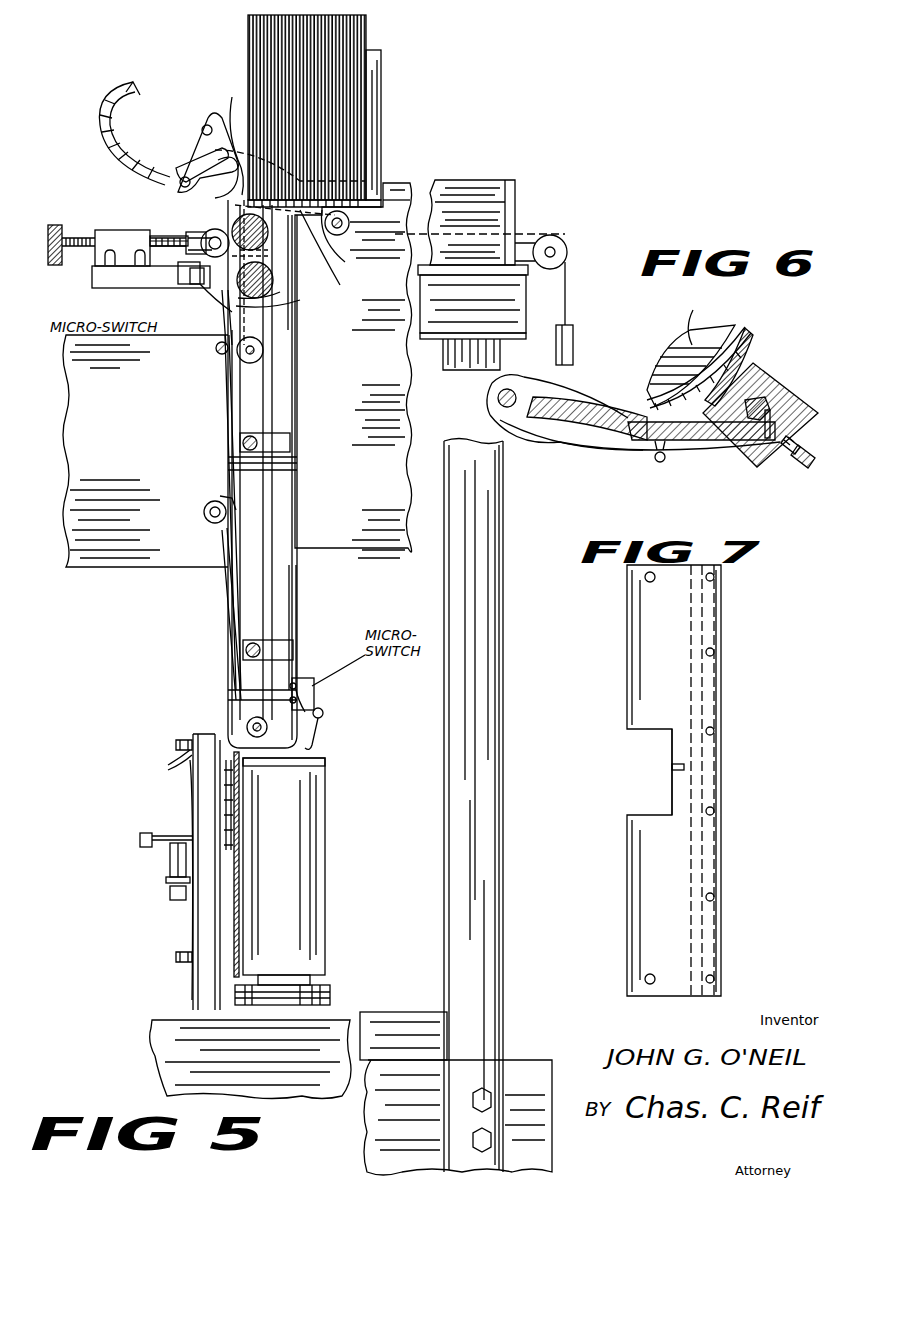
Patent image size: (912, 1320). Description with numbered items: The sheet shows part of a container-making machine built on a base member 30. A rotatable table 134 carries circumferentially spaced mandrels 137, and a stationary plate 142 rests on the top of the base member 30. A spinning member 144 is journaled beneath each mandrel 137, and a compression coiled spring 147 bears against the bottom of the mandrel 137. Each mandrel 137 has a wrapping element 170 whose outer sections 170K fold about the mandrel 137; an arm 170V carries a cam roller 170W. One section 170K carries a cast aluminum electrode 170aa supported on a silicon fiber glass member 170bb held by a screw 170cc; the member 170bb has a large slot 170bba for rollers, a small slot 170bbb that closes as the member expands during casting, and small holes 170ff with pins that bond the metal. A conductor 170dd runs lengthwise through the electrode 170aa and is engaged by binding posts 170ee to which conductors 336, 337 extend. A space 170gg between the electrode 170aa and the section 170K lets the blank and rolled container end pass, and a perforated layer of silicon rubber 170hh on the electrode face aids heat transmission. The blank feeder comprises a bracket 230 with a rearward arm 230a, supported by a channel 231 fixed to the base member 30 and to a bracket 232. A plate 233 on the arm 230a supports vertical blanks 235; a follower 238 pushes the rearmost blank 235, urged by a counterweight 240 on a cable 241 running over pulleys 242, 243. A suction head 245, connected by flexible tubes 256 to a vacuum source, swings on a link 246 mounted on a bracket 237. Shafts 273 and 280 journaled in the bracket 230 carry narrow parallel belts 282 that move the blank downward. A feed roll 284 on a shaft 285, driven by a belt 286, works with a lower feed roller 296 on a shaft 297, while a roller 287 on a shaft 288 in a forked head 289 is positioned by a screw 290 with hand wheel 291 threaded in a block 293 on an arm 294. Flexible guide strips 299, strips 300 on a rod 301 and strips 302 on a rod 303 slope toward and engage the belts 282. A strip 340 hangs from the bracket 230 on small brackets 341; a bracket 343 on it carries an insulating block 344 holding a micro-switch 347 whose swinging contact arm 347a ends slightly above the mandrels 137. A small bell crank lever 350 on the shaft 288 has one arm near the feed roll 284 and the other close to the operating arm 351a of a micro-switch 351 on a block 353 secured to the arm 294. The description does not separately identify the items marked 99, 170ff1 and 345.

In FIG. 5, the base member 30 is at (516, 1065).
In FIG. 6, the pad 99 is at (661, 331).
In FIG. 5, the rotatable table 134 is at (165, 1030).
In FIG. 5, the mandrel 137 is at (303, 828).
In FIG. 6, the mandrel 137 is at (682, 314).
In FIG. 5, the stationary plate 142 is at (160, 1060).
In FIG. 5, the spinning member 144 is at (332, 996).
In FIG. 5, the compression coiled spring 147 is at (292, 981).
In FIG. 5, the wrapping element 170 is at (196, 798).
In FIG. 6, the wrapping element 170 is at (614, 470).
In FIG. 6, the outer section 170K is at (591, 412).
In FIG. 5, the arm 170V is at (165, 828).
In FIG. 5, the cam roller 170W is at (140, 843).
In FIG. 6, the electrode 170aa is at (815, 402).
In FIG. 6, the plate-like member 170bb is at (712, 441).
In FIG. 7, the plate-like member 170bb is at (644, 626).
In FIG. 7, the large slot 170bba is at (640, 754).
In FIG. 7, the small slot 170bbb is at (672, 767).
In FIG. 6, the screw 170cc is at (660, 462).
In FIG. 6, the conductor 170dd is at (750, 392).
In FIG. 6, the binding post 170ee is at (805, 460).
In FIG. 6, the small holes and pins 170ff is at (768, 442).
In FIG. 6, the holes 170ff1 is at (782, 443).
In FIG. 7, the holes 170ff1 is at (712, 580).
In FIG. 6, the space 170gg is at (648, 384).
In FIG. 6, the layer of silicon rubber 170hh is at (745, 340).
In FIG. 5, the bracket 230 is at (328, 270).
In FIG. 5, the horizontally extending arm 230a is at (470, 212).
In FIG. 5, the channel 231 is at (505, 520).
In FIG. 5, the bracket 232 is at (528, 305).
In FIG. 5, the plate 233 is at (340, 240).
In FIG. 5, the blank 235 is at (357, 45).
In FIG. 6, the blank 235 is at (753, 357).
In FIG. 5, the bracket 237 is at (219, 137).
In FIG. 5, the follower 238 is at (382, 127).
In FIG. 5, the counterweight 240 is at (575, 340).
In FIG. 5, the cable 241 is at (567, 272).
In FIG. 5, the pulley 242 is at (548, 238).
In FIG. 5, the pulley 243 is at (345, 214).
In FIG. 5, the suction head 245 is at (170, 172).
In FIG. 5, the link 246 is at (188, 163).
In FIG. 5, the flexible tubes 256 is at (98, 103).
In FIG. 5, the shaft 273 is at (258, 350).
In FIG. 5, the shaft 280 is at (274, 268).
In FIG. 5, the belts 282 is at (264, 405).
In FIG. 5, the feed roll 284 is at (268, 236).
In FIG. 5, the shaft 285 is at (272, 249).
In FIG. 5, the belt 286 is at (266, 330).
In FIG. 5, the roller 287 is at (207, 226).
In FIG. 5, the shaft 288 is at (190, 246).
In FIG. 5, the forked head 289 is at (190, 236).
In FIG. 5, the screw 290 is at (78, 235).
In FIG. 5, the hand wheel 291 is at (50, 228).
In FIG. 5, the block 293 is at (125, 222).
In FIG. 5, the arm 294 is at (92, 278).
In FIG. 5, the feed roller 296 is at (300, 296).
In FIG. 5, the shaft 297 is at (305, 306).
In FIG. 5, the flexible guide strips 299 is at (224, 322).
In FIG. 5, the flexible guide strips 300 is at (228, 384).
In FIG. 5, the rod 301 is at (215, 355).
In FIG. 5, the guide strips 302 is at (228, 557).
In FIG. 5, the rod 303 is at (218, 498).
In FIG. 5, the conductor 336 is at (165, 773).
In FIG. 5, the conductor 337 is at (178, 748).
In FIG. 5, the strip 340 is at (297, 612).
In FIG. 5, the brackets 341 is at (283, 455).
In FIG. 5, the bracket 343 is at (302, 668).
In FIG. 5, the block 344 is at (316, 690).
In FIG. 5, the terminals 345 is at (290, 704).
In FIG. 5, the micro-switch 347 is at (322, 710).
In FIG. 5, the swinging contact arm 347a is at (318, 742).
In FIG. 5, the bell crank lever 350 is at (240, 170).
In FIG. 5, the micro-switch 351 is at (200, 286).
In FIG. 5, the operating arm 351a is at (222, 280).
In FIG. 5, the block 353 is at (190, 280).